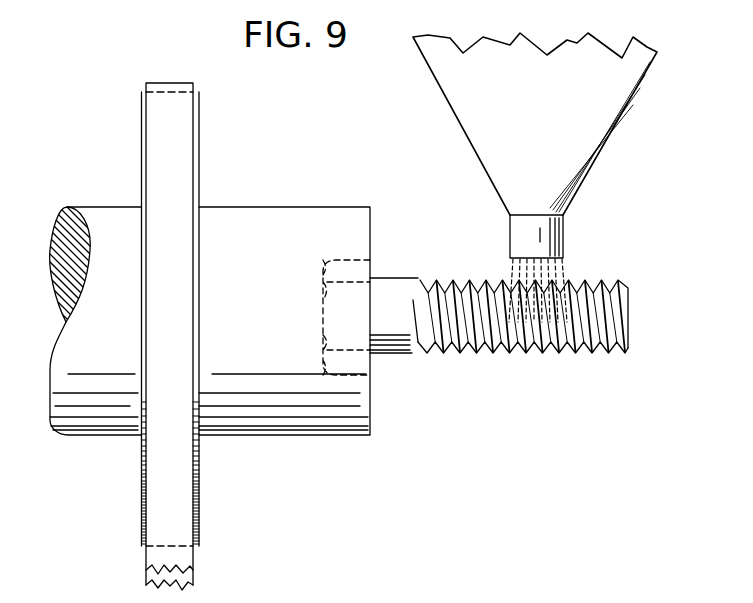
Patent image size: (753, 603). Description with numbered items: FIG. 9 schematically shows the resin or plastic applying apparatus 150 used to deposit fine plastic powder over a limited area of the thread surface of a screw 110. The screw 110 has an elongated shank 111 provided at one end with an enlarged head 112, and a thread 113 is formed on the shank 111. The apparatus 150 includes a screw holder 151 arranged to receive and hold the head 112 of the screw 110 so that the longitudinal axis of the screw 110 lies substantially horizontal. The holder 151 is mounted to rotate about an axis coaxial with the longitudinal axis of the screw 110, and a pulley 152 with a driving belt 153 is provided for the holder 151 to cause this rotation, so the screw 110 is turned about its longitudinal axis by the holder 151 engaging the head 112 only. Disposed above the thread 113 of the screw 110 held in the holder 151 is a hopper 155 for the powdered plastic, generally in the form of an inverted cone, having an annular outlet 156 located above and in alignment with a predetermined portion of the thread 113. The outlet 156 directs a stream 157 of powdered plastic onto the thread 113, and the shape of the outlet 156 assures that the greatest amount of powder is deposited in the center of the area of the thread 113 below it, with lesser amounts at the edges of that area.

The screw 110 is at (507, 317).
The elongated shank 111 is at (402, 292).
The enlarged head 112 is at (349, 258).
The thread 113 is at (607, 347).
The resin or plastic applying apparatus 150 is at (280, 203).
The screw holder 151 is at (277, 415).
The pulley 152 is at (196, 497).
The driving belt 153 is at (178, 556).
The hopper 155 is at (603, 142).
The annular outlet 156 is at (565, 240).
The stream of powdered plastic 157 is at (560, 265).